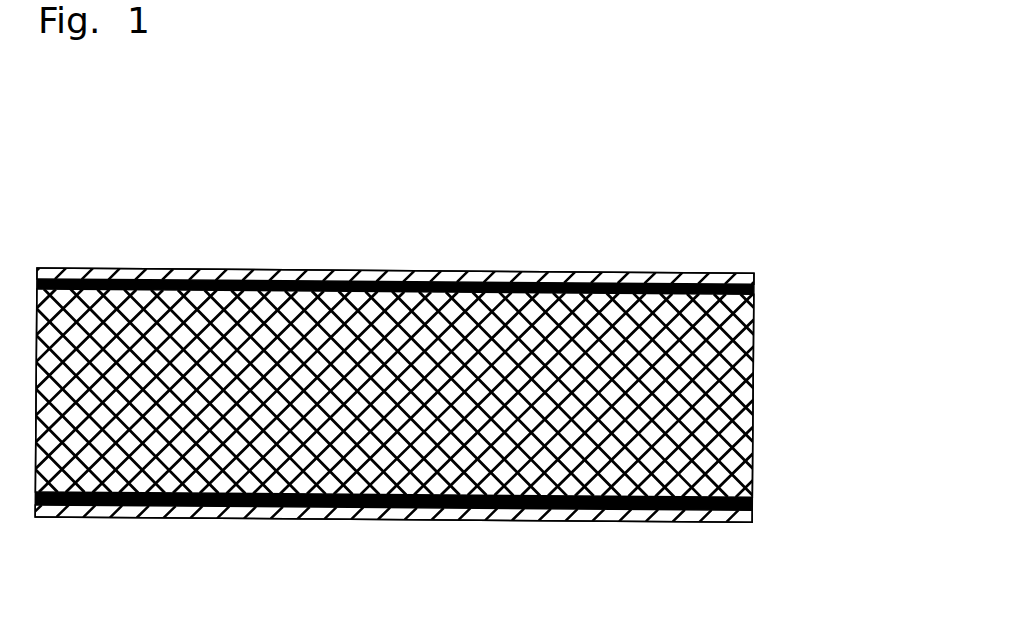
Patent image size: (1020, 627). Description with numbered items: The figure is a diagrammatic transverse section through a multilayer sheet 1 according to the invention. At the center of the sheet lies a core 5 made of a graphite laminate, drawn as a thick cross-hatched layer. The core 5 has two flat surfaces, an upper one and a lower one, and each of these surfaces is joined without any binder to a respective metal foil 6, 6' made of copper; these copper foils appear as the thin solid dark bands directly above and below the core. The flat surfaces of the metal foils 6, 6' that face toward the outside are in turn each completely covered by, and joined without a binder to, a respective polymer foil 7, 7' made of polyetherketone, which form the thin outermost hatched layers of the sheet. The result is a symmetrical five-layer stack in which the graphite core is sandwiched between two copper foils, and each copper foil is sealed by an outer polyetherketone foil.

The multilayer sheet 1 is at (372, 252).
The core 5 is at (660, 389).
The metal foil 6 is at (463, 285).
The metal foil 6' is at (464, 503).
The polymer foil 7 is at (458, 232).
The polymer foil 7' is at (462, 564).